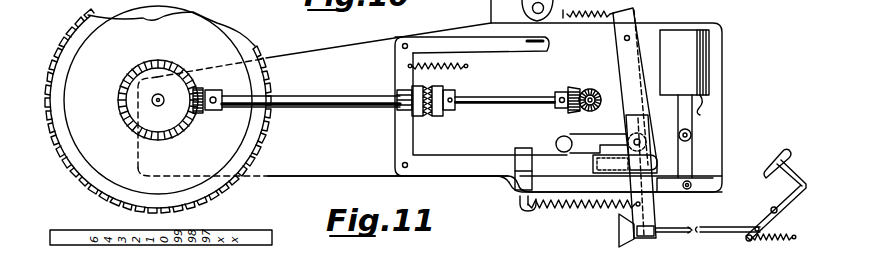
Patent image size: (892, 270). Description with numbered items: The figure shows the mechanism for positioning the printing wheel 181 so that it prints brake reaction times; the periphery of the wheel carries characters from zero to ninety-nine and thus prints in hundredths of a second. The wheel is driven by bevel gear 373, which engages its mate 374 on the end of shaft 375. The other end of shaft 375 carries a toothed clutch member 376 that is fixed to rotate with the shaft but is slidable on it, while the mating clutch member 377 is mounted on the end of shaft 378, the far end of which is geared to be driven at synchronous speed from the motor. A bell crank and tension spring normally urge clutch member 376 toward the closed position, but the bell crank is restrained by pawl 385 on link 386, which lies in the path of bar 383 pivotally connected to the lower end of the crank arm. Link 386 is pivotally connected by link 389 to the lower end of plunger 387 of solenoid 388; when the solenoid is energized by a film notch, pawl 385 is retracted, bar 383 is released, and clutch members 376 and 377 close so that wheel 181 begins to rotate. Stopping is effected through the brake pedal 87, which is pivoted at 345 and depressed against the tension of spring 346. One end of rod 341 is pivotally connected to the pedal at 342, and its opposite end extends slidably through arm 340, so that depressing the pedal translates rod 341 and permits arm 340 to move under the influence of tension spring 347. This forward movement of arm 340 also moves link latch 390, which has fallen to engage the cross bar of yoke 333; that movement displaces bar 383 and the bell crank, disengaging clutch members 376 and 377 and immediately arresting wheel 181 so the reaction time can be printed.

The printing wheel 181 is at (86, 52).
The bevel gear 373 is at (165, 136).
The mating bevel gear 374 is at (203, 111).
The shaft 375 is at (296, 97).
The toothed clutch member 376 is at (412, 115).
The mating clutch member 377 is at (436, 117).
The shaft 378 is at (495, 96).
The bar 383 is at (500, 163).
The pawl 385 is at (572, 177).
The link 386 is at (607, 211).
The tension spring 347 is at (566, 215).
The link latch 390 is at (568, 136).
The yoke 333 is at (638, 57).
The arm 340 is at (654, 218).
The rod 341 is at (662, 234).
The pivotal connection 342 is at (765, 227).
The pedal pivot 345 is at (772, 207).
The spring 346 is at (770, 246).
The brake pedal 87 is at (776, 161).
The plunger 387 is at (690, 121).
The link 389 is at (692, 159).
The solenoid 388 is at (702, 30).